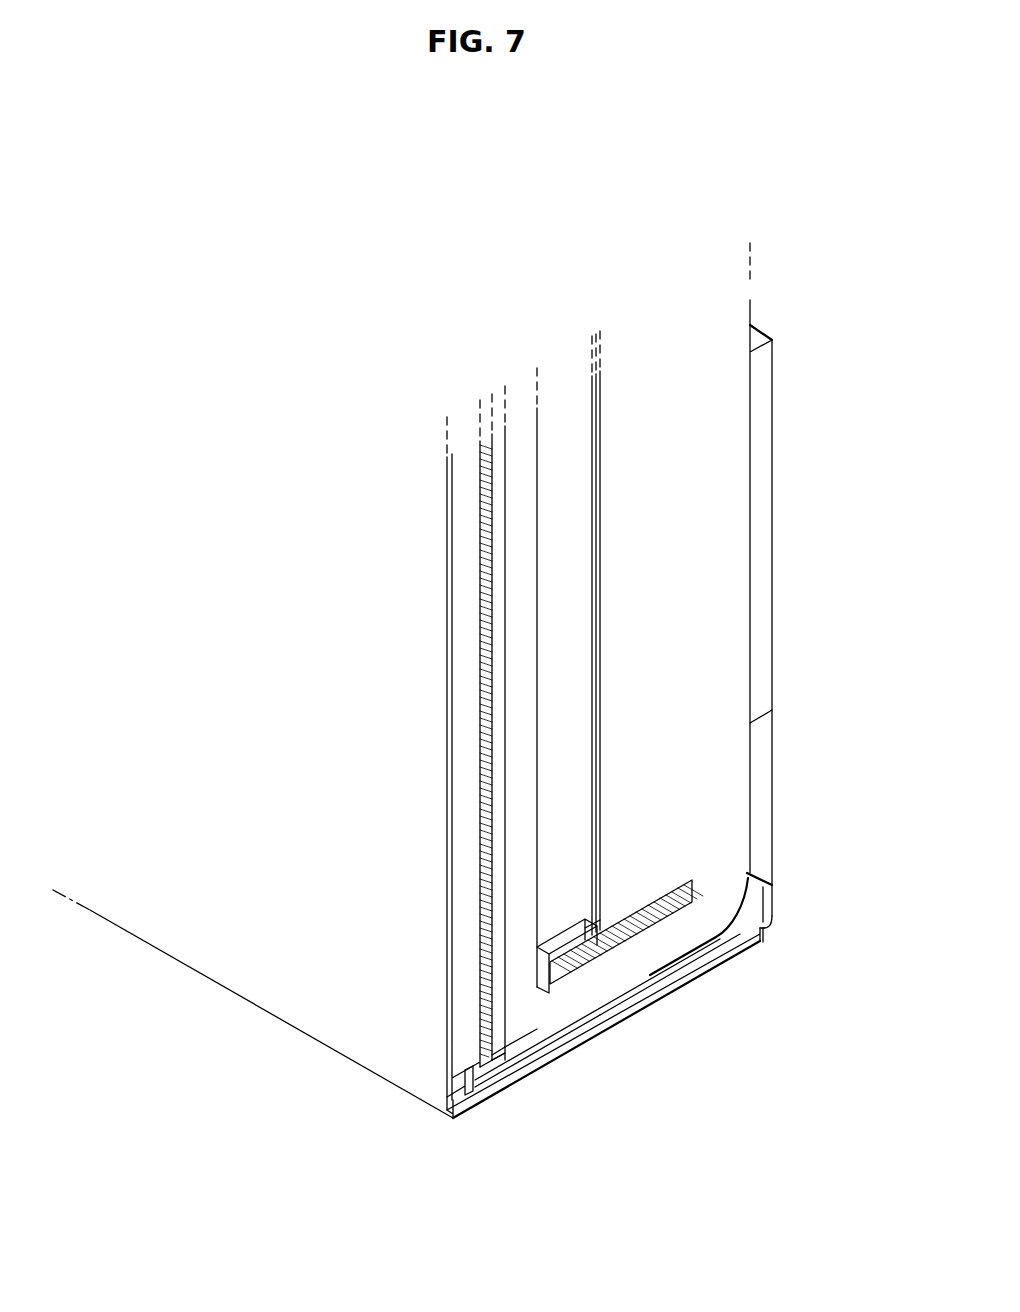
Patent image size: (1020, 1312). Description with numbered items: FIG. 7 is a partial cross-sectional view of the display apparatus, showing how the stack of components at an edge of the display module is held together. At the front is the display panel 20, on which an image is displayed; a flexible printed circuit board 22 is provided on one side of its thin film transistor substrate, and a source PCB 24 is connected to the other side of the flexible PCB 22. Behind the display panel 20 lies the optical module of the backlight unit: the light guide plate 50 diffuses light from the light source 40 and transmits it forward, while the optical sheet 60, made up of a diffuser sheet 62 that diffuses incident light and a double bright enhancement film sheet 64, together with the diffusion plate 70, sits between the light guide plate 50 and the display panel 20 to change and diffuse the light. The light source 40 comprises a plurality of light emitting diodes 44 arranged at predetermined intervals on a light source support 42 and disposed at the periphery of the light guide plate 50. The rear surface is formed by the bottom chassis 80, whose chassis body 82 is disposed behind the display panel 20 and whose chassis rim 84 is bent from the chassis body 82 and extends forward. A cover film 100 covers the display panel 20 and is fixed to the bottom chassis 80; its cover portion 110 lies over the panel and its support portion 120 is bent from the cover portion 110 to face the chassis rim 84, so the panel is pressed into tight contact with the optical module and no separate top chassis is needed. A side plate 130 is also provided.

The display panel 20 is at (457, 723).
The flexible printed circuit board 22 is at (440, 1097).
The source PCB 24 is at (766, 655).
The light source 40 is at (702, 1042).
The light source support 42 is at (597, 947).
The light emitting diode 44 is at (577, 955).
The light guide plate 50 is at (663, 983).
The optical sheet 60 is at (516, 1170).
The diffuser sheet 62 is at (523, 1032).
The double bright enhancement film sheet 64 is at (512, 1037).
The diffusion plate 70 is at (540, 1040).
The bottom chassis 80 is at (874, 1000).
The chassis body 82 is at (747, 832).
The chassis rim 84 is at (683, 958).
The cover film 100 is at (434, 1109).
The cover portion 110 is at (183, 927).
The support portion 120 is at (565, 1047).
The side plate 130 is at (607, 1040).